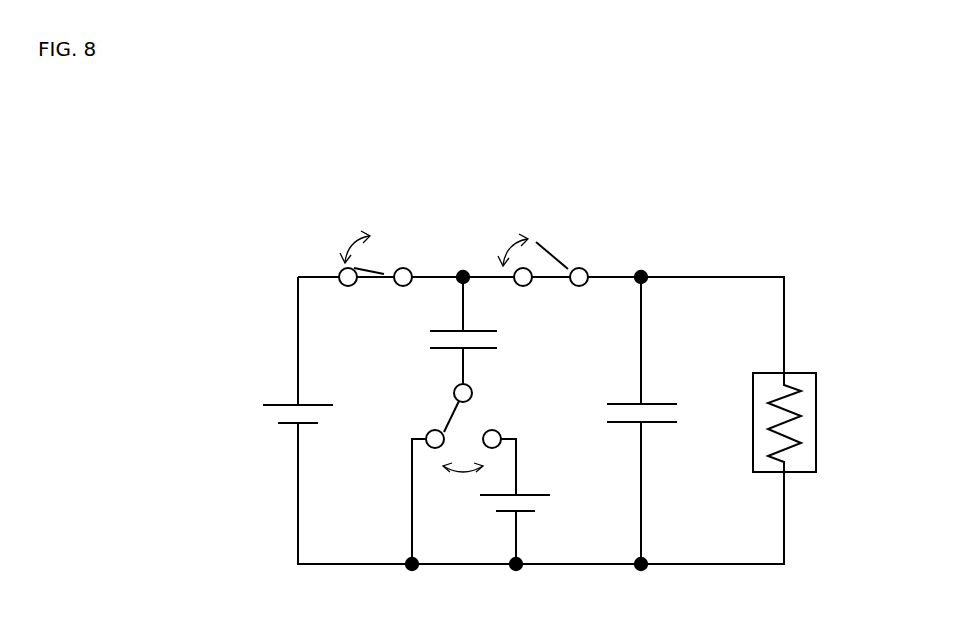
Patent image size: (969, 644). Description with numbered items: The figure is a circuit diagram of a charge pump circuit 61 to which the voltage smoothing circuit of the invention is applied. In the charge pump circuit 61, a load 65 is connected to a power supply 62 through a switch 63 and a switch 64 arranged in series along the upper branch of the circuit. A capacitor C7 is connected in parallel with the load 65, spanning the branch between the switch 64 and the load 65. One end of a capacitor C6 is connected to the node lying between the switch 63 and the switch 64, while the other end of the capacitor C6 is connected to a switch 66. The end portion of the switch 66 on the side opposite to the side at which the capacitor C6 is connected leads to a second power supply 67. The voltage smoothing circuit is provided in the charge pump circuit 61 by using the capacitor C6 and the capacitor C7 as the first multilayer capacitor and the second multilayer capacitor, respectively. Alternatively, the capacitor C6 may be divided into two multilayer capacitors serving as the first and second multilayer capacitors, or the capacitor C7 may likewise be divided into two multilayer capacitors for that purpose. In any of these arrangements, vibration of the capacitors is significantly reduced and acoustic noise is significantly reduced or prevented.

The charge pump circuit 61 is at (310, 183).
The power supply 62 is at (277, 404).
The switch 63 is at (383, 270).
The switch 64 is at (545, 252).
The load 65 is at (816, 407).
The switch 66 is at (448, 420).
The power supply 67 is at (536, 495).
The capacitor C6 is at (487, 331).
The capacitor C7 is at (655, 404).